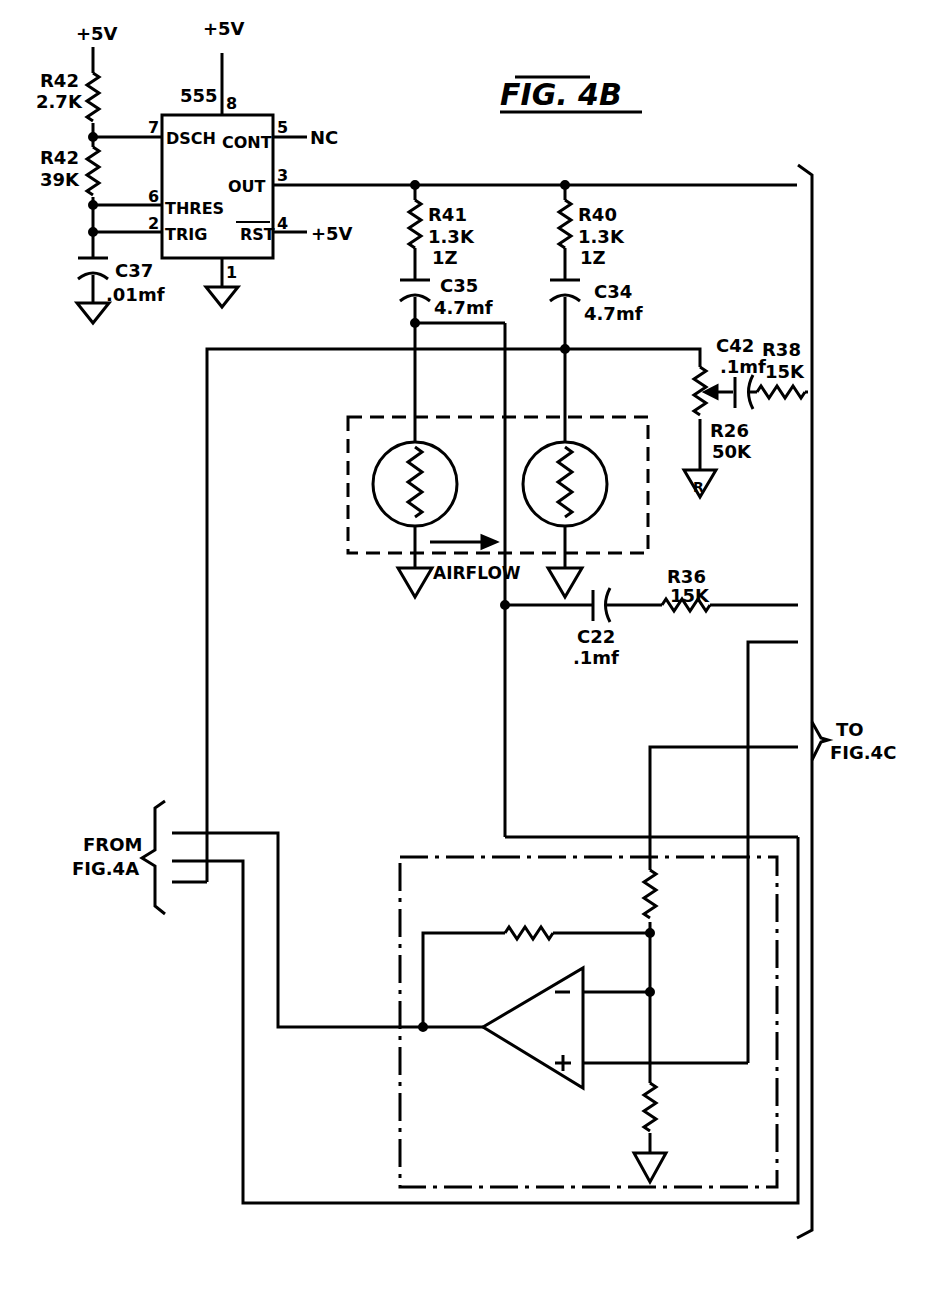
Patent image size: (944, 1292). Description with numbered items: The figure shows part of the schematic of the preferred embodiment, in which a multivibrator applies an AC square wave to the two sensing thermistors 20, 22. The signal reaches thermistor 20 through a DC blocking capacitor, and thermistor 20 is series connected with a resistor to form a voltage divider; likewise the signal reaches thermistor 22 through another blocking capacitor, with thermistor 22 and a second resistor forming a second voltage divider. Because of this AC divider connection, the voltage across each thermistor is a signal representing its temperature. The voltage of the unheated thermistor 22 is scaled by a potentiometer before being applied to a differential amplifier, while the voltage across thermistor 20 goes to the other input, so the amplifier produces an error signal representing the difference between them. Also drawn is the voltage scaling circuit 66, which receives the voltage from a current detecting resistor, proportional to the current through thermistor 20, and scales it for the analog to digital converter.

The thermistor 20 is at (399, 451).
The thermistor 22 is at (578, 451).
The voltage scaling circuit 66 is at (400, 1080).